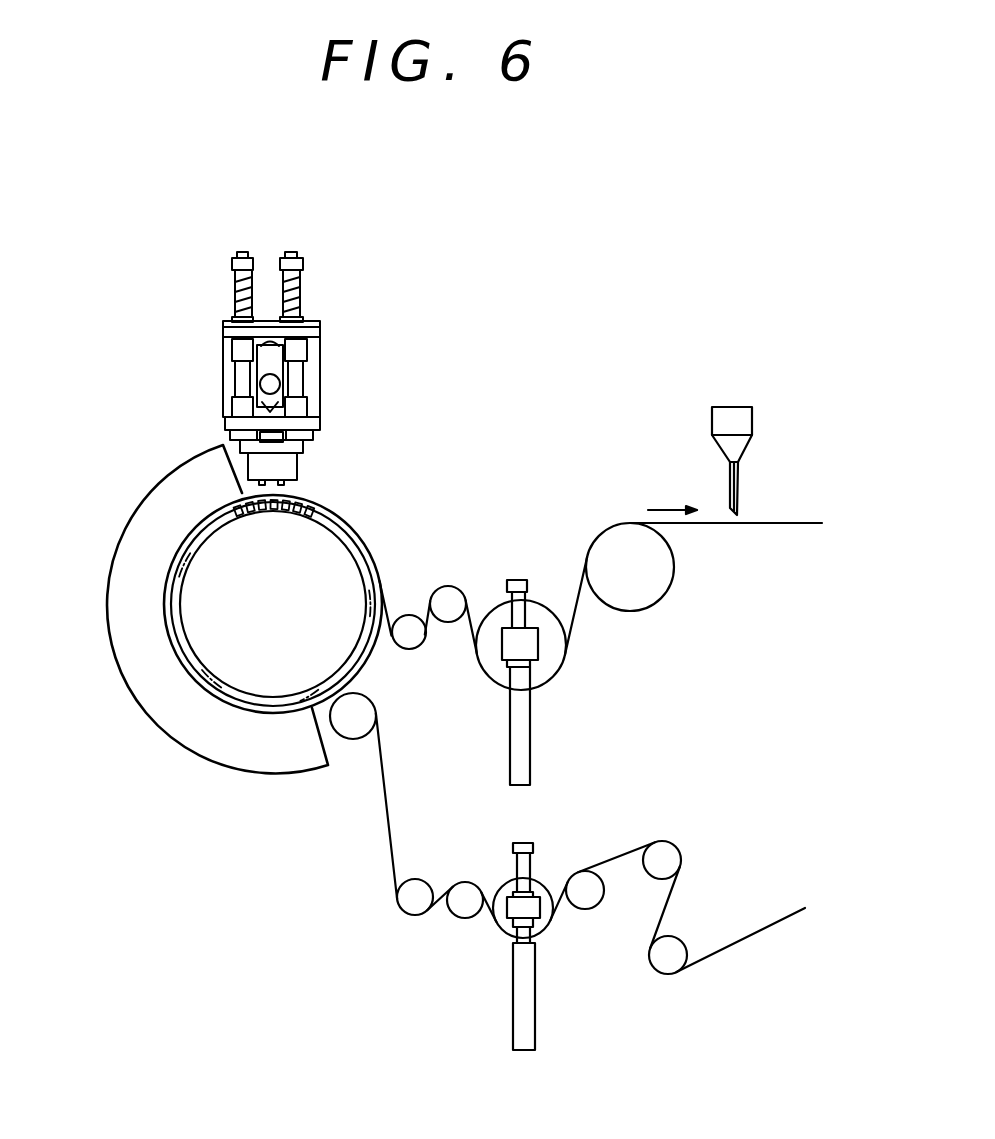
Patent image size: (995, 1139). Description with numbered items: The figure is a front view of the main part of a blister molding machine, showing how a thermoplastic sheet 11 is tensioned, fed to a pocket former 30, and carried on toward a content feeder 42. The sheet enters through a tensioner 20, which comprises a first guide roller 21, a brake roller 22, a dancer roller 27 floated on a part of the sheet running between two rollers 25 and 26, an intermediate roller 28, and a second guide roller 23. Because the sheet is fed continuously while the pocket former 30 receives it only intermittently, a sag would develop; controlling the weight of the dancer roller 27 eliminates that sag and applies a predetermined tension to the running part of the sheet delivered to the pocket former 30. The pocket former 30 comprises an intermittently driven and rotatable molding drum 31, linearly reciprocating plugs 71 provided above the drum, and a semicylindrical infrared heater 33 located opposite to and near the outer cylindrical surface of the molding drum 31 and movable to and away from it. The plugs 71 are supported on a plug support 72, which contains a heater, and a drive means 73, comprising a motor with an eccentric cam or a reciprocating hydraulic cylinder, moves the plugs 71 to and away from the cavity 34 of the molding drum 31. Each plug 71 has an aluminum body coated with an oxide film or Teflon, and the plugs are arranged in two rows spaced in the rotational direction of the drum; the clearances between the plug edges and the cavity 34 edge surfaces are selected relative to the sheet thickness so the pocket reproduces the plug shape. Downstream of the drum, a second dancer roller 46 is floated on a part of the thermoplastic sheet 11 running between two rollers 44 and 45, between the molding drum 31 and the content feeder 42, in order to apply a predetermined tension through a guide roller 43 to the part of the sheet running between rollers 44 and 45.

The thermoplastic sheet 11 is at (785, 920).
The tensioner 20 is at (688, 934).
The first guide roller 21 is at (673, 965).
The brake roller 22 is at (670, 850).
The second guide roller 23 is at (355, 730).
The roller 25 is at (587, 895).
The roller 26 is at (465, 905).
The dancer roller 27 is at (537, 885).
The intermediate roller 28 is at (415, 893).
The pocket former 30 is at (132, 725).
The molding drum 31 is at (345, 660).
The semicylindrical infrared heater 33 is at (208, 746).
The cavity 34 is at (313, 495).
The content feeder 42 is at (742, 418).
The guide roller 43 is at (405, 628).
The roller 44 is at (447, 611).
The roller 45 is at (662, 570).
The dancer roller 46 is at (549, 656).
The linearly reciprocating plug 71 is at (283, 483).
The plug support 72 is at (297, 467).
The drive means 73 is at (320, 353).